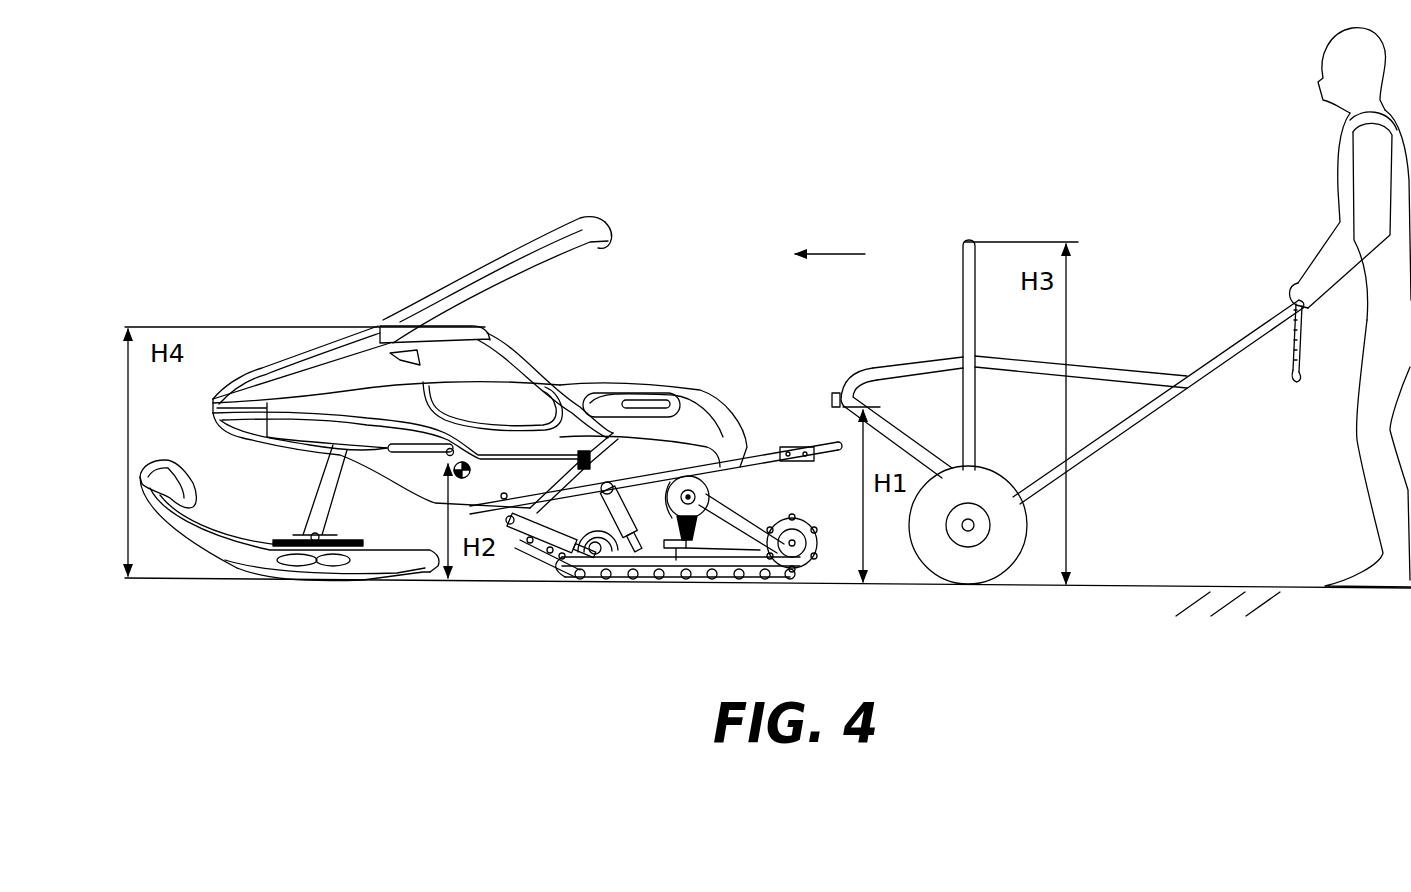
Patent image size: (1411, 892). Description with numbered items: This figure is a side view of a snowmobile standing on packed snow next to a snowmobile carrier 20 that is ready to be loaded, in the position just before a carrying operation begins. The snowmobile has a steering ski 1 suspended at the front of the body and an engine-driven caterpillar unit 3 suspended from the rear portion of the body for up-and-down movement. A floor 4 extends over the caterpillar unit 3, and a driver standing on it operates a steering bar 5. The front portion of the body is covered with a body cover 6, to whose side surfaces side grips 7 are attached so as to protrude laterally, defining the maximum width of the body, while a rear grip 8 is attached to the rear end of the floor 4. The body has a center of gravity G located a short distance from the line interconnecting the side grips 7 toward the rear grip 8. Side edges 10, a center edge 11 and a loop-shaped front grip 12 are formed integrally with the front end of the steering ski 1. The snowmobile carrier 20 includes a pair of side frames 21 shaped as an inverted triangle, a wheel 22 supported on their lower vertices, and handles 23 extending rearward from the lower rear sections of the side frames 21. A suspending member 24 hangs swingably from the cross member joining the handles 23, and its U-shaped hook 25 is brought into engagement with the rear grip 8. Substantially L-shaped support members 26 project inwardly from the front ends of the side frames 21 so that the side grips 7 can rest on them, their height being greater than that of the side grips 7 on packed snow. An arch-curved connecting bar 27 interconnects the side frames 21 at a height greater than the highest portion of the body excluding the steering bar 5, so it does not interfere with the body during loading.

The steering ski 1 is at (178, 549).
The caterpillar unit 3 is at (763, 511).
The floor 4 is at (760, 446).
The steering bar 5 is at (610, 246).
The body cover 6 is at (307, 358).
The side grips 7 is at (407, 456).
The rear grip 8 is at (830, 446).
The side edges 10 is at (332, 575).
The center edge 11 is at (315, 583).
The front grip 12 is at (168, 458).
The snowmobile carrier 20 is at (1131, 300).
The side frames 21 is at (912, 360).
The wheel 22 is at (1013, 532).
The handles 23 is at (1234, 338).
The suspending member 24 is at (1302, 338).
The hook 25 is at (1250, 358).
The support members 26 is at (833, 397).
The connecting bar 27 is at (962, 278).
The center of gravity G is at (471, 472).